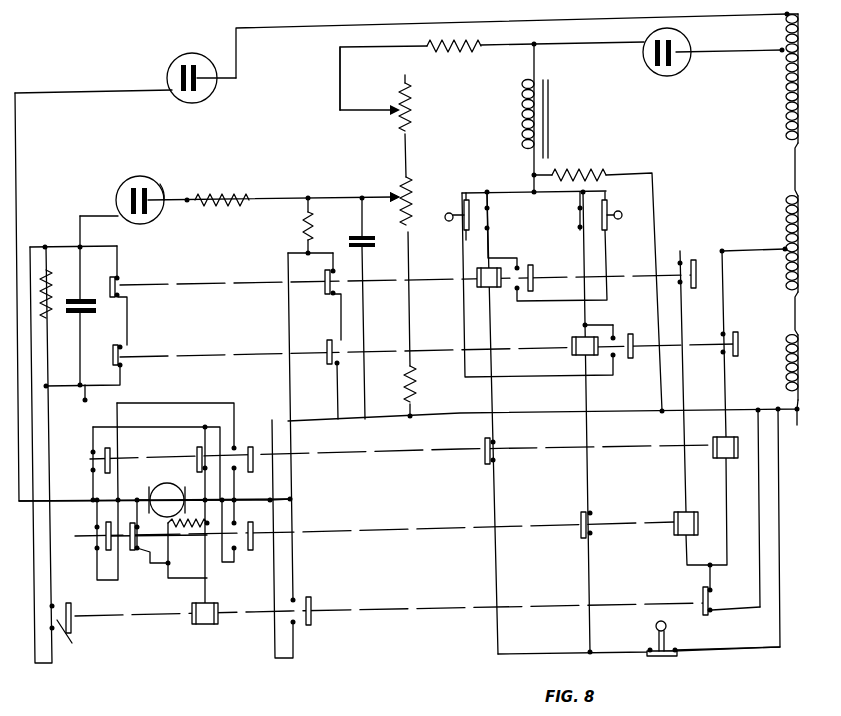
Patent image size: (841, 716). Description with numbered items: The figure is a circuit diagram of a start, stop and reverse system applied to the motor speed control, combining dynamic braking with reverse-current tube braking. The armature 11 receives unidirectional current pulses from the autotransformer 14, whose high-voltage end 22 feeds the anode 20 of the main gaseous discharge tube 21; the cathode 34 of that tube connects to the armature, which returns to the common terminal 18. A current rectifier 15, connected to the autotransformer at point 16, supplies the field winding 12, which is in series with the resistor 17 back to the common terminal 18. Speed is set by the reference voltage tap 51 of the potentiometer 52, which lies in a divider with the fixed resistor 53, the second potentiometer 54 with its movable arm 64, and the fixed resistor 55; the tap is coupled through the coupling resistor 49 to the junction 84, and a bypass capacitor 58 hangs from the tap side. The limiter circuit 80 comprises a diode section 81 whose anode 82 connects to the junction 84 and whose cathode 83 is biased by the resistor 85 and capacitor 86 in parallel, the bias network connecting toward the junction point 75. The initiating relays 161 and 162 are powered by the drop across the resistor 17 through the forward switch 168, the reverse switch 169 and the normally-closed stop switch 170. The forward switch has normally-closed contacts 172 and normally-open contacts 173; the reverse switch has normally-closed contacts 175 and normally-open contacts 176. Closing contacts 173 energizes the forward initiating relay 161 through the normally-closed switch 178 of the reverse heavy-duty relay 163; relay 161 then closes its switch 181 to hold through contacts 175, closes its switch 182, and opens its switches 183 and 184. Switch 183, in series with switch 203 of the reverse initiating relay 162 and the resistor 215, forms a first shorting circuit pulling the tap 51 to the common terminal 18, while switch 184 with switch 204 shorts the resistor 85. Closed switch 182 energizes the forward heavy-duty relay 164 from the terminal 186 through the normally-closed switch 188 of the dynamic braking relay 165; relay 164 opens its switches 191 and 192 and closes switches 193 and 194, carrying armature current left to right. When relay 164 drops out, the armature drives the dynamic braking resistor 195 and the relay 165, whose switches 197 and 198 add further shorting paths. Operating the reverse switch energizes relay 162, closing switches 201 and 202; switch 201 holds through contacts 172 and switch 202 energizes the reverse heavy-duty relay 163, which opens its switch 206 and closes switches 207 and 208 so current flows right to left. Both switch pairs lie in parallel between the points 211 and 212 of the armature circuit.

The armature 11 is at (176, 509).
The field winding 12 is at (522, 116).
The autotransformer 14 is at (787, 212).
The current rectifier 15 is at (684, 70).
The autotransformer point 16 is at (783, 55).
The resistor 17 is at (578, 160).
The common end 18 is at (791, 437).
The anode 20 is at (200, 82).
The main grid controlled gaseous discharge tube 21 is at (168, 74).
The remaining end of autotransformer 22 is at (780, 18).
The cathode 34 is at (175, 93).
The coupling resistor 49 is at (218, 190).
The reference voltage tap 51 is at (383, 192).
The potentiometer 52 is at (410, 190).
The fixed resistor 53 is at (457, 52).
The second potentiometer 54 is at (412, 122).
The fixed resistor 55 is at (416, 396).
The bypass capacitor 58 is at (352, 222).
The movable arm 64 is at (352, 106).
The junction point 75 is at (83, 402).
The limiter circuit 80 is at (152, 246).
The diode section 81 is at (162, 184).
The anode 82 is at (146, 186).
The cathode 83 is at (133, 186).
The junction 84 is at (187, 204).
The resistor 85 is at (49, 327).
The capacitor 86 is at (72, 296).
The forward initiating relay 161 is at (491, 287).
The reverse initiating relay 162 is at (574, 347).
The reverse heavy-duty relay 163 is at (730, 437).
The forward heavy-duty relay 164 is at (686, 530).
The dynamic braking relay 165 is at (205, 624).
The forward push-button control switch 168 is at (441, 226).
The reverse push-button control switch 169 is at (626, 215).
The stop switch 170 is at (657, 645).
The normally-closed contacts 172 is at (463, 200).
The normally-open contacts 173 is at (490, 226).
The normally-closed contacts 175 is at (608, 208).
The normally-open contacts 176 is at (577, 210).
The normally-closed switch 178 is at (493, 450).
The normally-open switch 181 is at (531, 265).
The normally-open switch 182 is at (695, 260).
The normally-closed switch 183 is at (334, 285).
The normally-closed switch 184 is at (120, 283).
The terminal 186 is at (783, 251).
The normally-closed switch 188 is at (712, 600).
The first normally-closed switch 191 is at (588, 525).
The second normally-closed switch 192 is at (150, 560).
The normally-open switch 193 is at (104, 536).
The normally-open switch 194 is at (248, 550).
The dynamic braking resistor 195 is at (186, 528).
The first normally-open switch 197 is at (305, 596).
The second normally-open switch 198 is at (73, 633).
The first normally-open switch 201 is at (619, 338).
The second normally-open switch 202 is at (737, 335).
The normally-closed switch 203 is at (326, 345).
The normally-closed switch 204 is at (120, 355).
The second normally-closed switch 206 is at (198, 455).
The first normally-open switch 207 is at (103, 460).
The second normally-open switch 208 is at (249, 445).
The point 211 is at (92, 499).
The point 212 is at (291, 498).
The resistor 215 is at (300, 232).